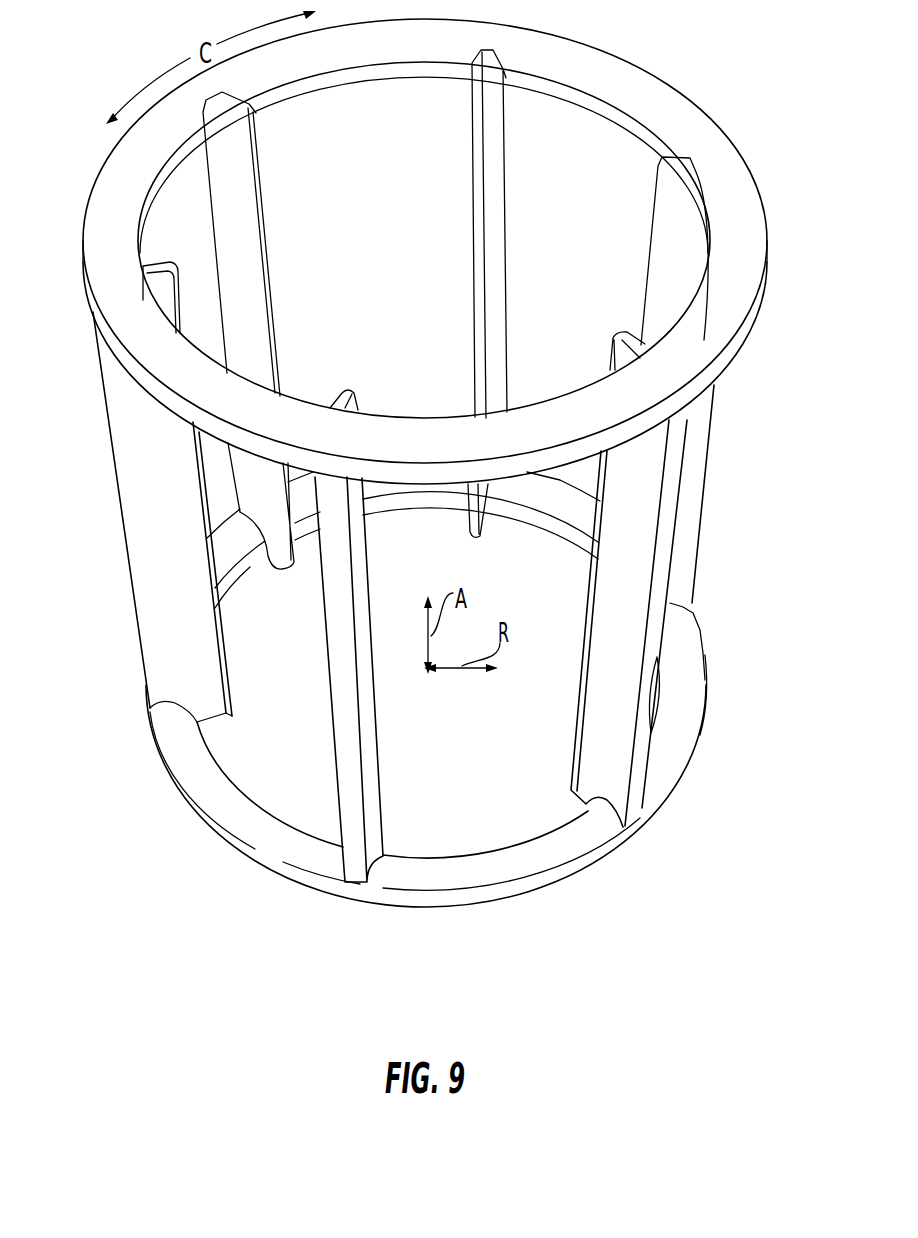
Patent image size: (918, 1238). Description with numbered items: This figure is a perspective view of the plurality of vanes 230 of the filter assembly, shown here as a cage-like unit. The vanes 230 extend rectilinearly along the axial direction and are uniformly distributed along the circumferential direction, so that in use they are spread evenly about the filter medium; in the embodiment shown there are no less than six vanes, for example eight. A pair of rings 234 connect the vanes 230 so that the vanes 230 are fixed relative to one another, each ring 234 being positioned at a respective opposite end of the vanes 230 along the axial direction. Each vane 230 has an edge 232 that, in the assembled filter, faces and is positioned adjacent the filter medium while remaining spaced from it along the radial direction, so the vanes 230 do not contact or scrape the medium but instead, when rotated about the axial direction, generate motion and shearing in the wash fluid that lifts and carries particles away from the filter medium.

The vanes 230 is at (500, 194).
The edge 232 is at (275, 241).
The rings 234 is at (737, 195).